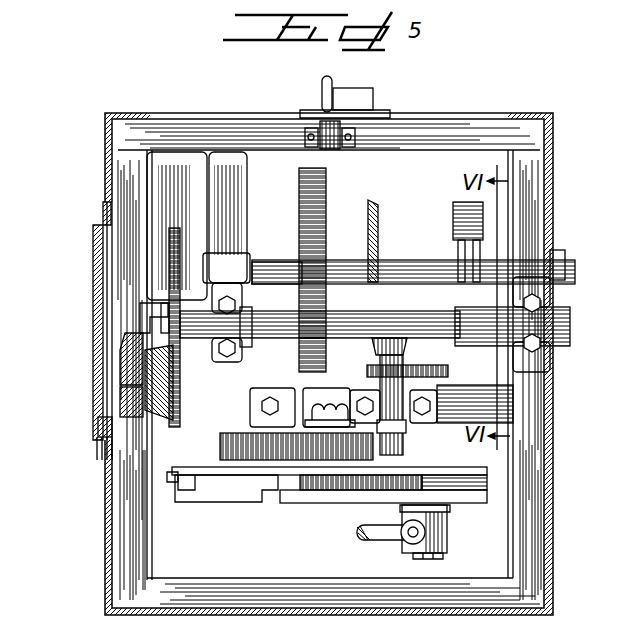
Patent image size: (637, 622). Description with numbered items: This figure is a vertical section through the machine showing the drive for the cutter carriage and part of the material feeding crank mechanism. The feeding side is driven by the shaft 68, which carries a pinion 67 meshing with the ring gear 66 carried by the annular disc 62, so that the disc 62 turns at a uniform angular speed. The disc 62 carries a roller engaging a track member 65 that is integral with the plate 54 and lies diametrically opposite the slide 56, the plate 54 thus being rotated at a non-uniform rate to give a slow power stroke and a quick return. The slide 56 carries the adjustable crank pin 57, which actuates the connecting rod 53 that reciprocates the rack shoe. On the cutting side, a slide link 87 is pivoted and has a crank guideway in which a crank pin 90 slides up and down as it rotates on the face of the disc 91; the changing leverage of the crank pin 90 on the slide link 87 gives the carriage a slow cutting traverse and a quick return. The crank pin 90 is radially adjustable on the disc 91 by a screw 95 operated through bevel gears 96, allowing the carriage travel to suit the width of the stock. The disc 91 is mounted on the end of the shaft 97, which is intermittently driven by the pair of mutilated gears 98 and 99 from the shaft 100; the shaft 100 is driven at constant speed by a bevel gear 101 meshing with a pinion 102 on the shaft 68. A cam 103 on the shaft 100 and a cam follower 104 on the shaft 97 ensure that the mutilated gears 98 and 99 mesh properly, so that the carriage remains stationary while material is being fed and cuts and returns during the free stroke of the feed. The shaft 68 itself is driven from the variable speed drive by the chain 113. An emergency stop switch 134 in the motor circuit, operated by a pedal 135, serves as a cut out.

The connecting rod 53 is at (396, 540).
The plate 54 is at (340, 490).
The slide 56 is at (460, 490).
The crank pin 57 is at (433, 553).
The annular disc 62 is at (477, 449).
The track member 65 is at (223, 488).
The ring gear 66 is at (220, 447).
The pinion 67 is at (440, 459).
The shaft 68 is at (446, 372).
The slide link 87 is at (117, 417).
The crank pin 90 is at (120, 387).
The disc 91 is at (168, 245).
The screw 95 is at (120, 360).
The bevel gears 96 is at (147, 332).
The shaft 97 is at (267, 330).
The mutilated gear 98 is at (306, 344).
The mutilated gear 99 is at (304, 243).
The shaft 100 is at (412, 267).
The bevel gear 101 is at (373, 214).
The pinion 102 is at (403, 345).
The cam 103 is at (478, 232).
The cam follower 104 is at (480, 270).
The chain 113 is at (367, 371).
The emergency stop switch 134 is at (355, 103).
The pedal 135 is at (322, 78).